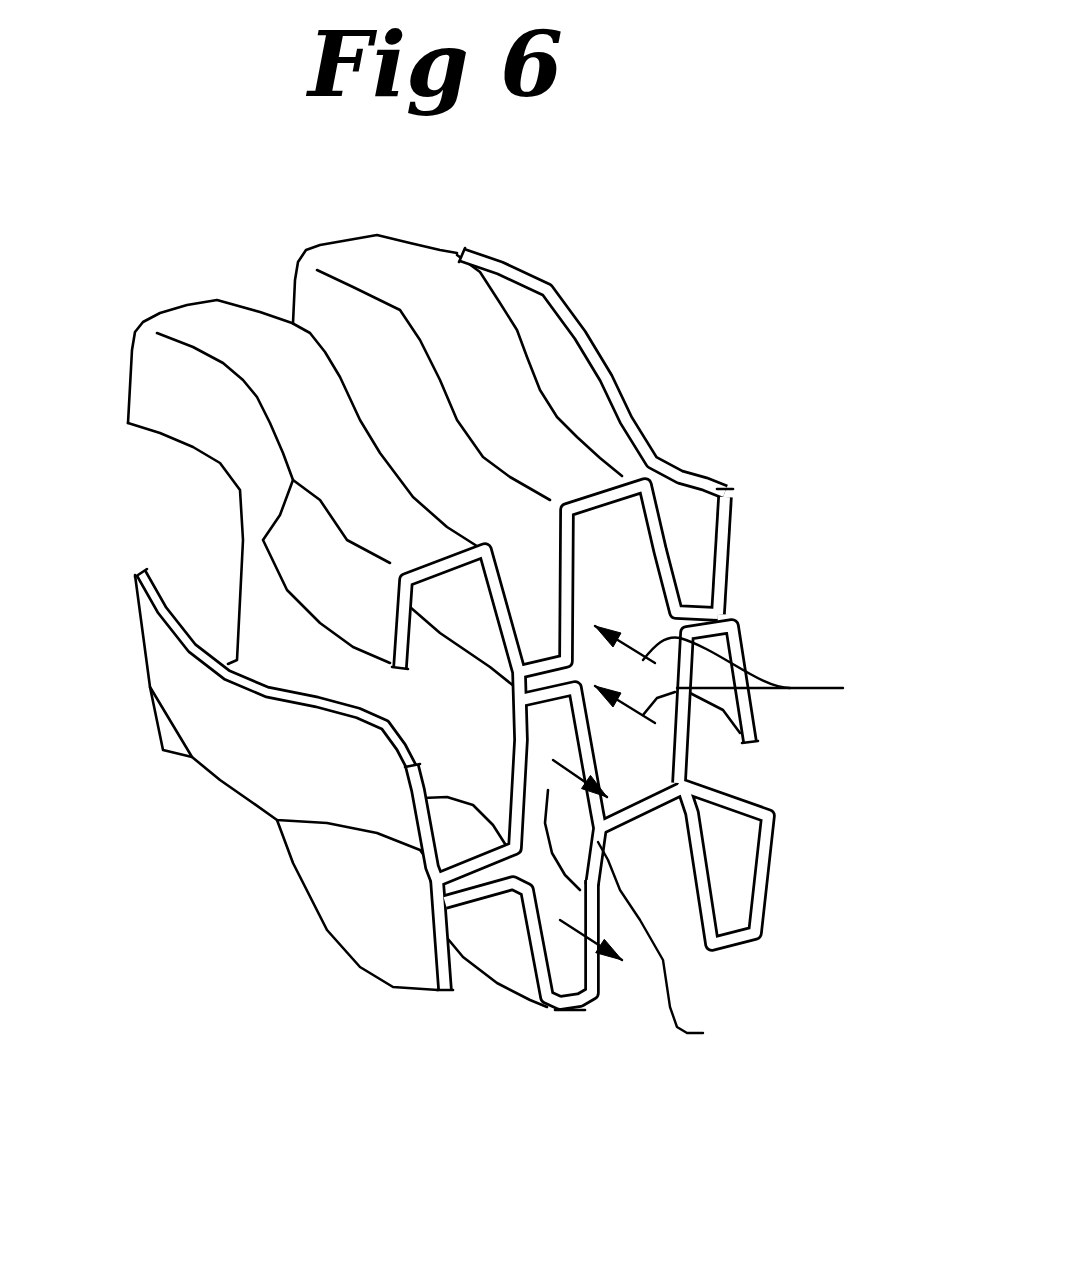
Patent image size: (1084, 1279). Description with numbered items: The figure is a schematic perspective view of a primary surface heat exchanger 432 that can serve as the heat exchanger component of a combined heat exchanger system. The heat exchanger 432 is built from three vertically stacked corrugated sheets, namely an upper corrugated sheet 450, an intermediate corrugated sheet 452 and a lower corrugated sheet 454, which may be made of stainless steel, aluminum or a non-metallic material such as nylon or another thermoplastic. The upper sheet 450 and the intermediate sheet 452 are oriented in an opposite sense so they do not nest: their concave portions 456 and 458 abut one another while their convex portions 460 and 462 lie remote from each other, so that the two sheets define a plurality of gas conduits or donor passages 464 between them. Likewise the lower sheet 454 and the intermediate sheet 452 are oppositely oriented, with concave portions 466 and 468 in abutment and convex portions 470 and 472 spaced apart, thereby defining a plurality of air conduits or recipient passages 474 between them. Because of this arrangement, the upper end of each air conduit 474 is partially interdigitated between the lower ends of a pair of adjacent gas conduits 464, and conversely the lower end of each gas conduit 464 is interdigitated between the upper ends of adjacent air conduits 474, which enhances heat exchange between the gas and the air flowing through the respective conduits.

The primary surface heat exchanger 432 is at (503, 701).
The upper corrugated sheet 450 is at (493, 383).
The intermediate corrugated sheet 452 is at (783, 730).
The lower corrugated sheet 454 is at (781, 890).
The concave portions of the upper sheet 456 is at (821, 555).
The concave portions of the intermediate sheet 458 is at (801, 690).
The convex portions of the upper sheet 460 is at (694, 531).
The convex portions of the intermediate sheet 462 is at (757, 827).
The gas conduits 464 is at (502, 567).
The concave portions of the lower sheet 466 is at (491, 956).
The concave portions of the intermediate sheet 468 is at (387, 807).
The convex portions of the lower sheet 470 is at (621, 1066).
The convex portions of the intermediate sheet 472 is at (341, 791).
The air conduits 474 is at (510, 928).